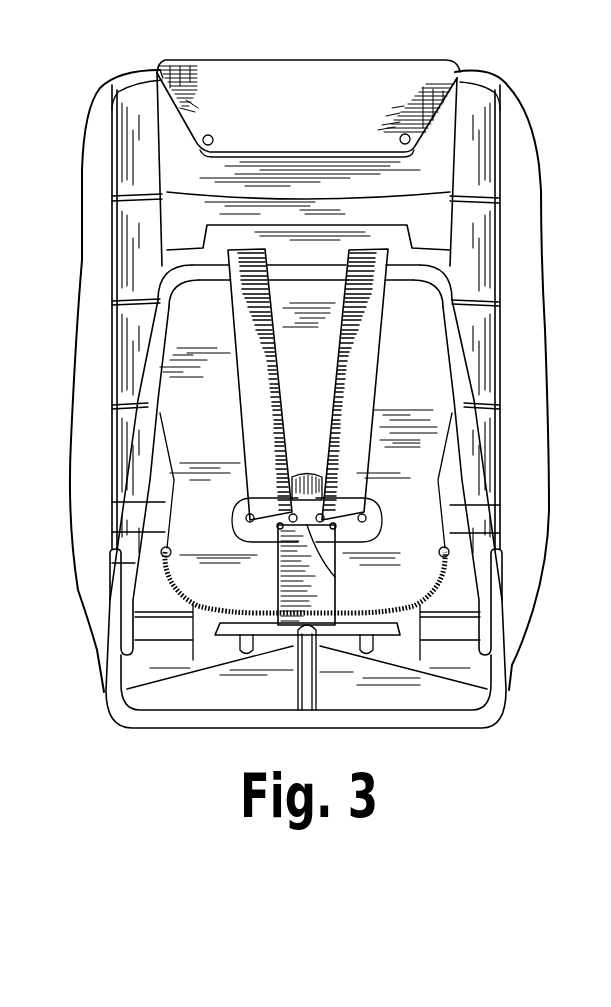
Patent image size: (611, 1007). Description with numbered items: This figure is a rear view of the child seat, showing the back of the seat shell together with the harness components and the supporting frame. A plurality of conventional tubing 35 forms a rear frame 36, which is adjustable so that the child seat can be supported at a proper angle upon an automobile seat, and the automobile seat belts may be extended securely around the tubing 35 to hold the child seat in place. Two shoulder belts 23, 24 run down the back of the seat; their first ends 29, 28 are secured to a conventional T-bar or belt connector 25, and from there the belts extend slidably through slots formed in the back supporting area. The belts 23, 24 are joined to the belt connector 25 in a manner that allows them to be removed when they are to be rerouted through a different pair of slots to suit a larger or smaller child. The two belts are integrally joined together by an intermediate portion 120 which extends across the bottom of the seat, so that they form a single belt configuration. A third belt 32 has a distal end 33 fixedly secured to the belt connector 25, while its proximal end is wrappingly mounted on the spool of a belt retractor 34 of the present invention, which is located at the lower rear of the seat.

The belt 23 is at (380, 320).
The belt 24 is at (247, 323).
The belt connector 25 is at (308, 476).
The first end 28 is at (252, 490).
The first end 29 is at (358, 480).
The third belt 32 is at (276, 576).
The distal end 33 is at (336, 574).
The belt retractor 34 is at (337, 638).
The tubing 35 is at (463, 370).
The rear frame 36 is at (510, 738).
The intermediate portion 120 is at (173, 557).